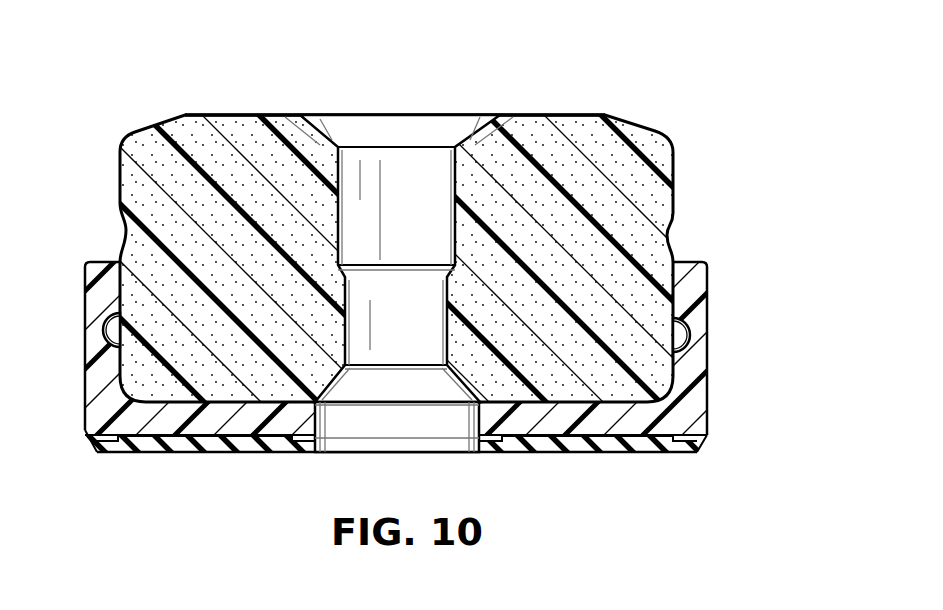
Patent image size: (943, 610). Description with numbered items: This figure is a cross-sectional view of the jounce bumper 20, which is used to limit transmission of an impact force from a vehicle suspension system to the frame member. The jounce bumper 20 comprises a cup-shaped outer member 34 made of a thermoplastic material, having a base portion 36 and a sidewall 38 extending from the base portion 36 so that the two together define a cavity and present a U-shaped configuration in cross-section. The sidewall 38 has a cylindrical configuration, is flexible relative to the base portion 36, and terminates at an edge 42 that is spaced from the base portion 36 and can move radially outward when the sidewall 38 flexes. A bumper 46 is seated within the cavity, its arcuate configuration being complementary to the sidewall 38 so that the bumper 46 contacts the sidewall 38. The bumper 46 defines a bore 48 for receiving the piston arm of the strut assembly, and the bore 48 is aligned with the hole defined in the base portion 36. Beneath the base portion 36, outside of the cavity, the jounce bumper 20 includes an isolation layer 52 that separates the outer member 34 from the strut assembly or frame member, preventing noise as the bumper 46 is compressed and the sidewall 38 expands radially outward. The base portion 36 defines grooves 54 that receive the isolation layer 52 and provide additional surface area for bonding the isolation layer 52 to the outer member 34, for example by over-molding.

The jounce bumper 20 is at (471, 289).
The outer member 34 is at (431, 378).
The base portion 36 is at (315, 423).
The sidewall 38 is at (697, 283).
The edge 42 is at (103, 262).
The bumper 46 is at (471, 277).
The bore 48 is at (473, 133).
The isolation layer 52 is at (222, 443).
The grooves 54 is at (127, 433).